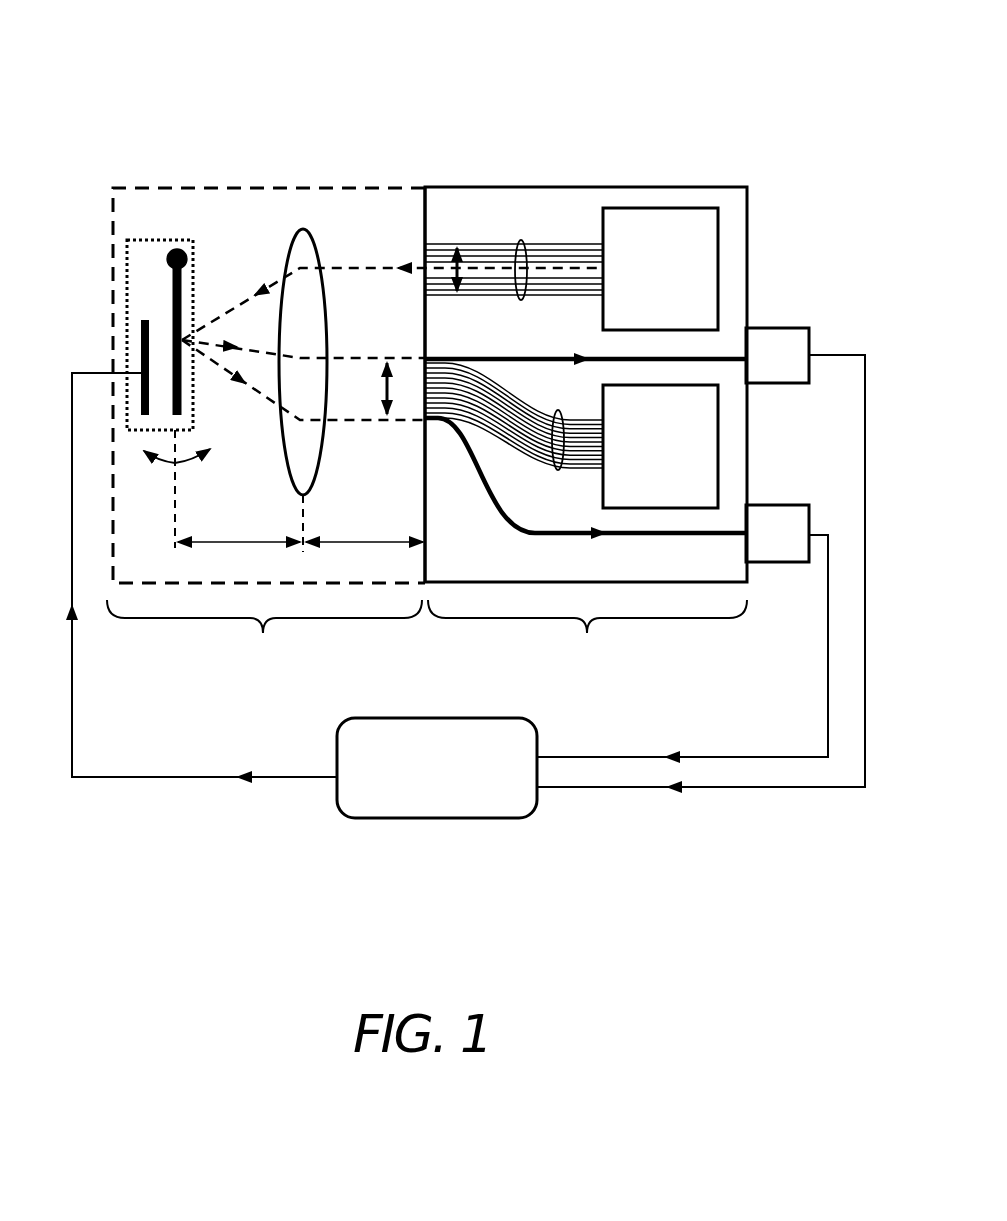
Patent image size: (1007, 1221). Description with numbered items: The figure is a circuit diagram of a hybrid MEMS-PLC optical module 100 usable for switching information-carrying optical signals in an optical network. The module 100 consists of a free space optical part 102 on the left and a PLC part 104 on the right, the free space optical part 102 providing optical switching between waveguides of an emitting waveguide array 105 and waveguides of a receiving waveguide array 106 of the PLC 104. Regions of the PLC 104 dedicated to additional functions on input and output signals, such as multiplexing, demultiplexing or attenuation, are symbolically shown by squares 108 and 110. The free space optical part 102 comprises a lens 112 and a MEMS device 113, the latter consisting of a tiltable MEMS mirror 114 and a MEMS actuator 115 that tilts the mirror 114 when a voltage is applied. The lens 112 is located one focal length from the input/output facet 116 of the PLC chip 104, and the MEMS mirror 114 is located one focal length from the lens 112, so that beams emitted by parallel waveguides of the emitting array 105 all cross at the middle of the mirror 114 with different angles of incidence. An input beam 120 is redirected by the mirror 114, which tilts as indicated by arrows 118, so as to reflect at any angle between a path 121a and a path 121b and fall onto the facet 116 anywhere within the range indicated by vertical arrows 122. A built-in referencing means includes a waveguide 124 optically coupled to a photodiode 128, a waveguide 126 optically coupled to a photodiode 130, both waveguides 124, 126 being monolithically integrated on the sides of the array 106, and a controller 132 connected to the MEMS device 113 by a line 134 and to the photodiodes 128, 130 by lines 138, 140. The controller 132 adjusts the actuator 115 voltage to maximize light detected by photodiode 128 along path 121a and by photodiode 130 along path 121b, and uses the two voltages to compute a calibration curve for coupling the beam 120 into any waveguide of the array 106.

The hybrid MEMS-PLC optical module 100 is at (240, 40).
The free space optical part 102 is at (266, 430).
The PLC part 104 is at (586, 430).
The emitting waveguide array 105 is at (520, 240).
The receiving waveguide array 106 is at (558, 470).
The input signal function region 108 is at (660, 269).
The output signal function region 110 is at (660, 446).
The lens 112 is at (303, 228).
The MEMS device 113 is at (127, 297).
The tiltable MEMS mirror 114 is at (175, 295).
The MEMS actuator 115 is at (141, 357).
The input/output facet 116 is at (425, 200).
The tilt arrows 118 is at (168, 472).
The input beam 120 is at (372, 270).
The first reflection path 121a is at (213, 340).
The second reflection path 121b is at (266, 398).
The range arrows 122 is at (363, 388).
The reference waveguide 124 is at (541, 357).
The reference waveguide 126 is at (505, 515).
The photodiode 128 is at (777, 355).
The photodiode 130 is at (777, 533).
The controller 132 is at (437, 768).
The line 134 is at (150, 777).
The line 138 is at (712, 787).
The line 140 is at (712, 757).